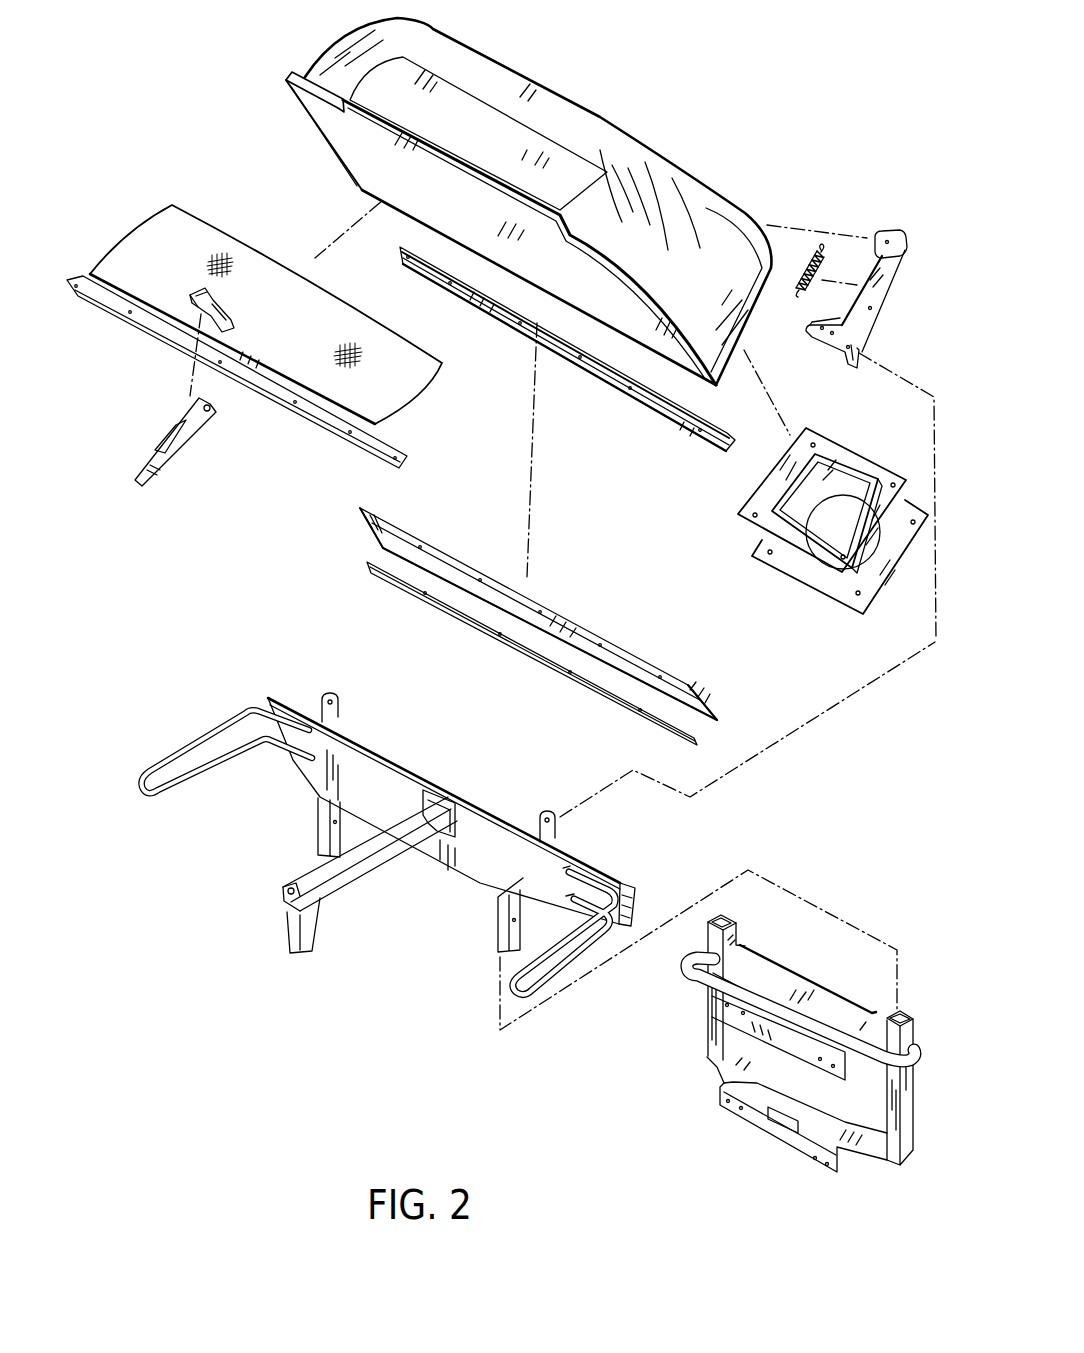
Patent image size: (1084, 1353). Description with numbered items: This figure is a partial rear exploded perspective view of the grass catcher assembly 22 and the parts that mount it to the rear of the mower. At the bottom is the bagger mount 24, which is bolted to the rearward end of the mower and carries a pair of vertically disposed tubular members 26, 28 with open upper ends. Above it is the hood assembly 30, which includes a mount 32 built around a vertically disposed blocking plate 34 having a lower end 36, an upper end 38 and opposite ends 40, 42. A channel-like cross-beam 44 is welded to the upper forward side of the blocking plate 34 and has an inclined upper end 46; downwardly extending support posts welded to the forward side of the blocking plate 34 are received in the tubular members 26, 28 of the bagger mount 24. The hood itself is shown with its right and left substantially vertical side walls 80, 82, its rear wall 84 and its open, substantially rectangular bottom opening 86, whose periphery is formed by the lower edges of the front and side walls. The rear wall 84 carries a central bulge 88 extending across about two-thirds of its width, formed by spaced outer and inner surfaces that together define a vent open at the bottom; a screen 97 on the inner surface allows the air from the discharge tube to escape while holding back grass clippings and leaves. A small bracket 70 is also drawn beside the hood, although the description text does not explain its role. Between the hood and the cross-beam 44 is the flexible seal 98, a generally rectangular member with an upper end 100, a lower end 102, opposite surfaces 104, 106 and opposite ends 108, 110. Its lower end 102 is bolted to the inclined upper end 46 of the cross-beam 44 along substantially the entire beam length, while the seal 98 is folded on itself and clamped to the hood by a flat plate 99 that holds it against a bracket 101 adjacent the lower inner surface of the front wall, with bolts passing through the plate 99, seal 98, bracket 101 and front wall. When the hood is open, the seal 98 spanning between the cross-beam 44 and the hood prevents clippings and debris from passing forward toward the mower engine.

The grass catcher assembly 22 is at (684, 146).
The bagger mount 24 is at (680, 1052).
The tubular member 26 is at (903, 1113).
The tubular member 28 is at (710, 1028).
The hood assembly 30 is at (750, 210).
The mount 32 is at (437, 778).
The blocking plate 34 is at (520, 810).
The lower end 36 is at (457, 877).
The upper end 38 is at (477, 808).
The end 40 is at (631, 907).
The end 42 is at (307, 728).
The cross-beam 44 is at (637, 888).
The inclined upper end 46 is at (613, 880).
The bracket 70 is at (884, 272).
The right side wall 80 is at (721, 284).
The left side wall 82 is at (380, 152).
The rear wall 84 is at (649, 247).
The bottom opening 86 is at (338, 163).
The central bulge 88 is at (477, 141).
The screen 97 is at (395, 365).
The flexible seal 98 is at (660, 656).
The flat plate 99 is at (463, 620).
The upper end 100 is at (683, 683).
The bracket 101 is at (700, 420).
The lower end 102 is at (660, 693).
The surface 104 is at (690, 693).
The surface 106 is at (487, 570).
The end 108 is at (713, 710).
The end 110 is at (365, 525).